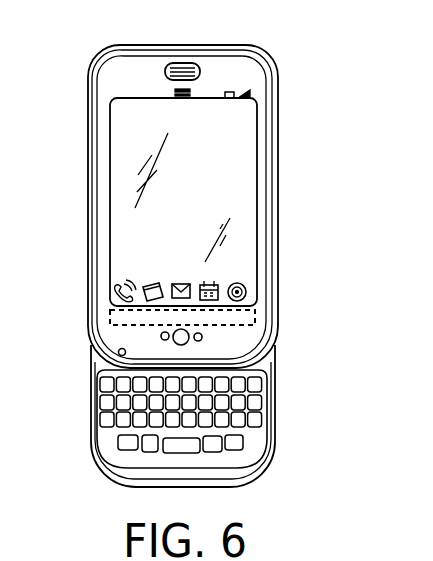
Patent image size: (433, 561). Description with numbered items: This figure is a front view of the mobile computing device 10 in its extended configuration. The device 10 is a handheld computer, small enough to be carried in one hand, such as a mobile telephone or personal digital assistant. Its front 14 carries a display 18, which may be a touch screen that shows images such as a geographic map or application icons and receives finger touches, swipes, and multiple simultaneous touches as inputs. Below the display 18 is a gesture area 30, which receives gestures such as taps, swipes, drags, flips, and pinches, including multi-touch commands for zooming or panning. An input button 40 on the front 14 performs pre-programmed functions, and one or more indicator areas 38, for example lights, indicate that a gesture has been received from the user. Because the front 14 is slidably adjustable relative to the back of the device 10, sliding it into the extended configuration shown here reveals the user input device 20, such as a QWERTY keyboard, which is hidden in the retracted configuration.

The device 10 is at (183, 243).
The front 14 is at (122, 72).
The display 18 is at (245, 173).
The user input device 20 is at (255, 405).
The gesture area 30 is at (252, 311).
The indicator area 38 is at (203, 339).
The input button 40 is at (176, 331).